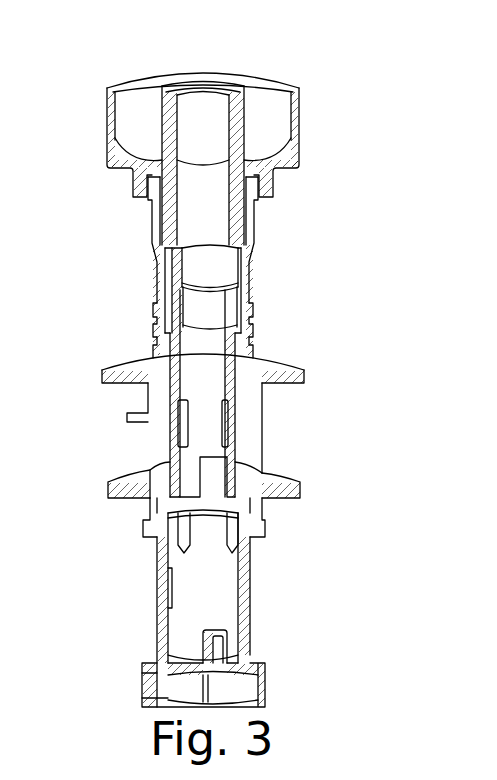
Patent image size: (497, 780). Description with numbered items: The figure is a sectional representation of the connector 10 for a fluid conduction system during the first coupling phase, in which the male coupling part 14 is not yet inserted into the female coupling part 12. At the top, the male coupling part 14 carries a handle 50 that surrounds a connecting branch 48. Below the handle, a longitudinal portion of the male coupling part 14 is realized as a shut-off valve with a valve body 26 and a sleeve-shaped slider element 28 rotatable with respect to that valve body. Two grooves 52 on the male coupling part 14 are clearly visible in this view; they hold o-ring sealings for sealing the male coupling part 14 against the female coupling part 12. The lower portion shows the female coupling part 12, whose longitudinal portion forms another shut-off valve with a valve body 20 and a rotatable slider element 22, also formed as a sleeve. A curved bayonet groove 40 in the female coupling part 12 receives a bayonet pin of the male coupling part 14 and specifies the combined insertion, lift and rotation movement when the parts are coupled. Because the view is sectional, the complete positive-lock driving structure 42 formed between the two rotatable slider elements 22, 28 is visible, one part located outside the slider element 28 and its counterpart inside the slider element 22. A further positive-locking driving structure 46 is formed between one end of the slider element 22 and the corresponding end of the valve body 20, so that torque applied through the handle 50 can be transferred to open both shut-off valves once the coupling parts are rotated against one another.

The connector 10 is at (352, 118).
The female coupling part 12 is at (262, 596).
The male coupling part 14 is at (132, 236).
The valve body 20 is at (265, 522).
The rotatable slider element 22 is at (165, 590).
The valve body 26 is at (163, 305).
The slider element 28 is at (248, 260).
The bayonet groove 40 is at (96, 471).
The positive-lock driving structure 42 is at (177, 462).
The positive-locking driving structure 46 is at (150, 688).
The connecting branch 48 is at (182, 82).
The handle 50 is at (262, 85).
The grooves 52 is at (248, 334).